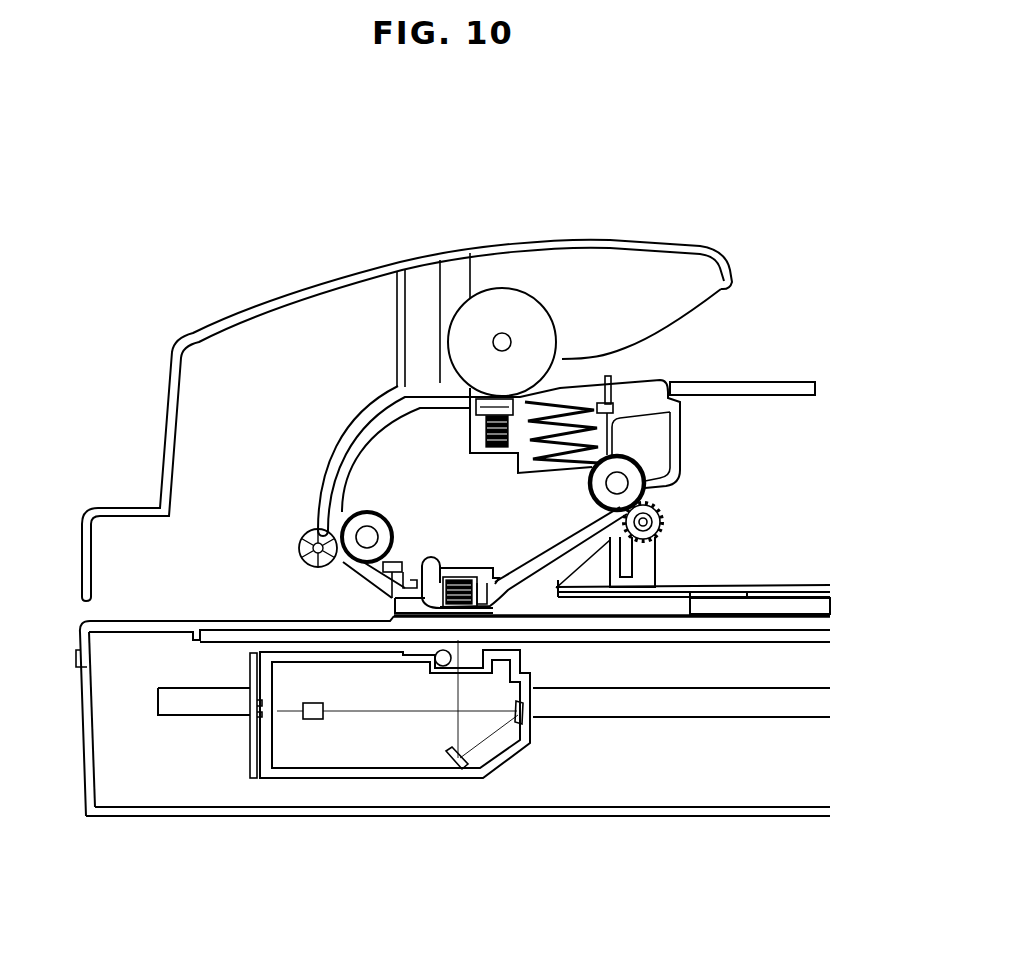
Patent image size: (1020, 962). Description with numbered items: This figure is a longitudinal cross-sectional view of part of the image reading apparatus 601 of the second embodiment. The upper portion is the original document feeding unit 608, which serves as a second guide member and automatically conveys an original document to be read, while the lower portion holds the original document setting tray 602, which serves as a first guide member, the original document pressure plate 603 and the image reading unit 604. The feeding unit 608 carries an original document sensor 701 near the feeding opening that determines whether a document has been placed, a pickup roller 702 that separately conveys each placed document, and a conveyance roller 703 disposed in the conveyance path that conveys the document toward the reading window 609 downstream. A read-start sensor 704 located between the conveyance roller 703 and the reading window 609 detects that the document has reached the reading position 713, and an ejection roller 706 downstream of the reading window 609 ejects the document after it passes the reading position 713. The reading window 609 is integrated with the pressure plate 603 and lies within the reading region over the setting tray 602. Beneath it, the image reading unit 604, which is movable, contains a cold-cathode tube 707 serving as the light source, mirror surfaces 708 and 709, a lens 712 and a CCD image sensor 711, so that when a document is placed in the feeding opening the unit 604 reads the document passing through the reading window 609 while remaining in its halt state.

The image reading apparatus 601 is at (212, 809).
The original document setting tray 602 is at (593, 635).
The original document pressure plate 603 is at (668, 617).
The image reading unit 604 is at (420, 780).
The original document feeding unit 608 is at (332, 335).
The reading window 609 is at (390, 620).
The original document sensor 701 is at (610, 367).
The pickup roller 702 is at (512, 290).
The conveyance roller 703 is at (345, 528).
The read-start sensor 704 is at (398, 557).
The ejection roller 706 is at (633, 474).
The cold-cathode tube 707 is at (437, 665).
The mirror surface 708 is at (454, 772).
The mirror surface 709 is at (514, 727).
The charge coupled device (CCD) image sensor 711 is at (258, 720).
The lens 712 is at (308, 720).
The reading position 713 is at (460, 556).